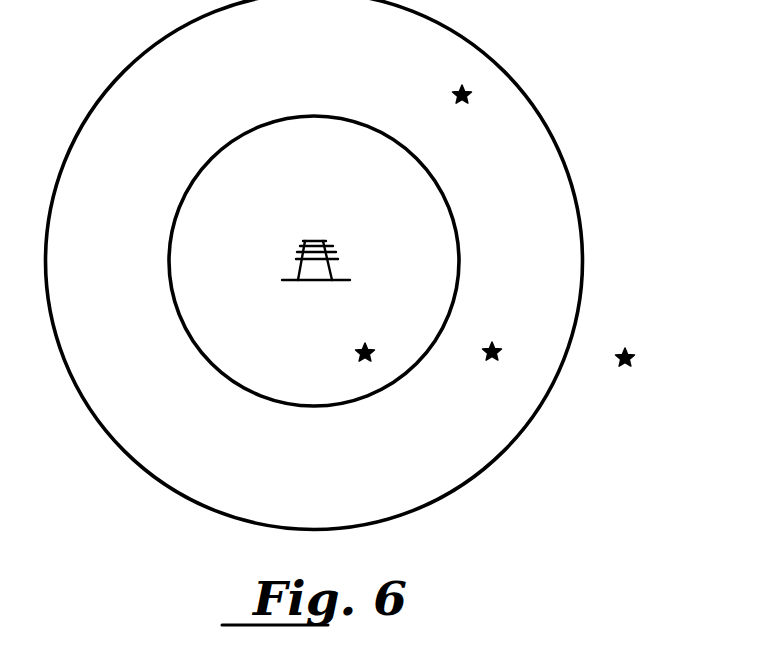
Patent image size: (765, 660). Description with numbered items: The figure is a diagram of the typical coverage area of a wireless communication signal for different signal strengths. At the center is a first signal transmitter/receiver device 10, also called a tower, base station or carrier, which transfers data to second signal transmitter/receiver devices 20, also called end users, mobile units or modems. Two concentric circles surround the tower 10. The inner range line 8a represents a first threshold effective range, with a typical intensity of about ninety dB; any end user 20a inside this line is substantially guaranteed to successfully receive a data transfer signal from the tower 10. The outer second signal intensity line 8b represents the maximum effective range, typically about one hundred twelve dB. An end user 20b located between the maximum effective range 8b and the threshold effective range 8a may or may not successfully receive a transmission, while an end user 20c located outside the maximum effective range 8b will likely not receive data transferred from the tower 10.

The range line 8a is at (178, 320).
The second signal intensity line 8b is at (137, 467).
The first signal transmitter/receiver device 10 is at (295, 252).
The second signal transmitter/receiver device 20 is at (452, 88).
The end user 20a is at (373, 341).
The end user 20b is at (497, 343).
The end user 20c is at (633, 347).